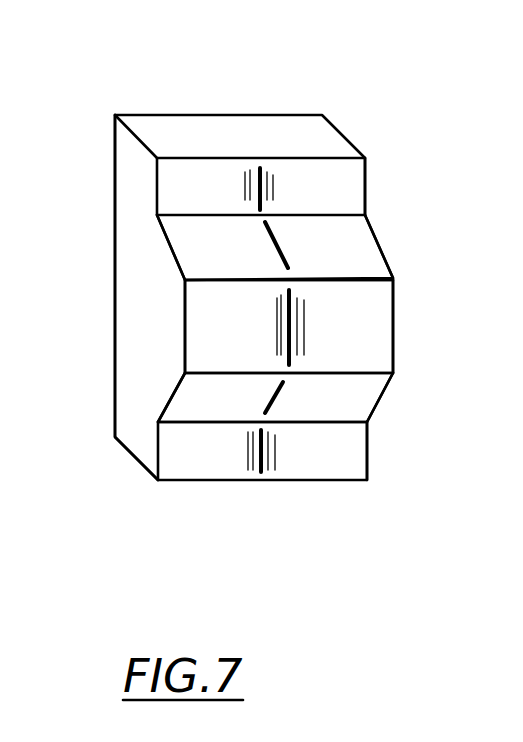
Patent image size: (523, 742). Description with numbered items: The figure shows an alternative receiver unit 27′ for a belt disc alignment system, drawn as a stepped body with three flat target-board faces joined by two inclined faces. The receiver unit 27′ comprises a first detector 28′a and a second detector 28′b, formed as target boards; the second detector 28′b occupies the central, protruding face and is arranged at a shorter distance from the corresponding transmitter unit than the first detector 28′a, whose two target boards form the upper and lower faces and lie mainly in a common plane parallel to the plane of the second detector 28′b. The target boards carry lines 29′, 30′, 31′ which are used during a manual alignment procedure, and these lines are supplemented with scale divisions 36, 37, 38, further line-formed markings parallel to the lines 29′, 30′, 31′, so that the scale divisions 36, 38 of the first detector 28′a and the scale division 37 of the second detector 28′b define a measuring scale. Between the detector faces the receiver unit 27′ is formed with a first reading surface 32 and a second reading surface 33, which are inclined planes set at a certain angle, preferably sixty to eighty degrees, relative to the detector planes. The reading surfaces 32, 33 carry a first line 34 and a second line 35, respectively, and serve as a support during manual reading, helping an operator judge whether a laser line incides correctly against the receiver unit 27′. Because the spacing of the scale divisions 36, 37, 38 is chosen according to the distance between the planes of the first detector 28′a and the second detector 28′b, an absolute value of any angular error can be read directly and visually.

The receiver unit 27′ is at (139, 438).
The first detector 28′a is at (334, 190).
The second detector 28′b is at (206, 320).
The line 29′ is at (268, 180).
The line 30′ is at (290, 347).
The line 31′ is at (247, 455).
The first reading surface 32 is at (183, 236).
The second reading surface 33 is at (317, 395).
The first line 34 is at (262, 232).
The second line 35 is at (268, 388).
The scale division 36 is at (243, 180).
The scale division 37 is at (277, 327).
The scale division 38 is at (278, 458).